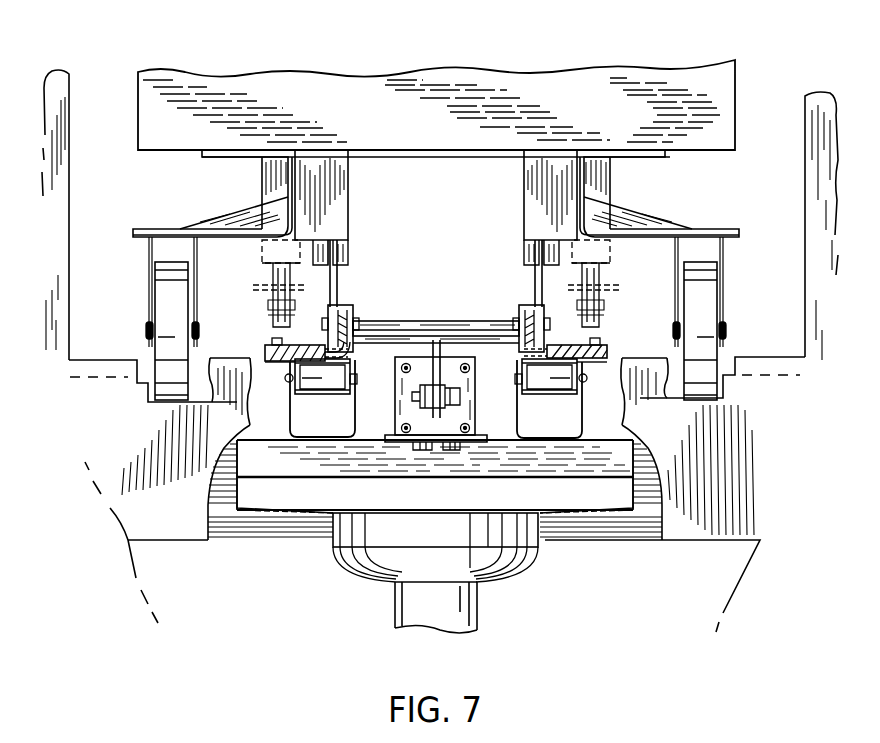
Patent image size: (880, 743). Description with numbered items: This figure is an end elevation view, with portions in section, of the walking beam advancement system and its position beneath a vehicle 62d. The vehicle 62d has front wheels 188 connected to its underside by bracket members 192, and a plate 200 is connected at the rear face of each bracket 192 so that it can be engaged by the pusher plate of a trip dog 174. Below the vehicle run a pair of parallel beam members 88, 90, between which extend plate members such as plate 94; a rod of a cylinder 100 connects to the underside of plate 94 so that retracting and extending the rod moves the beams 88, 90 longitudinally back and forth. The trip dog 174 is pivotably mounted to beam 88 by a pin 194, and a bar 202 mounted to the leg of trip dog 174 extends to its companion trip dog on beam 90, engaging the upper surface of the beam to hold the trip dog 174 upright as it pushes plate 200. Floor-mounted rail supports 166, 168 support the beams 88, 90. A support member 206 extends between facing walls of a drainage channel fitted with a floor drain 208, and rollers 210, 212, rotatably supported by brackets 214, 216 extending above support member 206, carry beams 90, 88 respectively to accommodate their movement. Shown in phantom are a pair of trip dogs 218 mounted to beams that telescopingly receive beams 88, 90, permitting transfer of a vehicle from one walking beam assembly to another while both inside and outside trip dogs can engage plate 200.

The vehicle 62d is at (453, 60).
The plate 200 is at (348, 212).
The bracket member 192 is at (222, 218).
The front wheels 188 is at (158, 263).
The trip dogs 218 is at (262, 275).
The bar 202 is at (345, 302).
The trip dog 174 is at (343, 282).
The pin 194 is at (354, 322).
The plate member 94 is at (420, 320).
The rail support 168 is at (273, 343).
The rail support 166 is at (603, 345).
The beam member 90 is at (347, 357).
The roller 210 is at (311, 396).
The roller 212 is at (562, 394).
The bracket 214 is at (288, 411).
The bracket 216 is at (586, 412).
The cylinder 100 is at (389, 391).
The beam member 88 is at (451, 394).
The support member 206 is at (420, 479).
The floor drain 208 is at (502, 573).